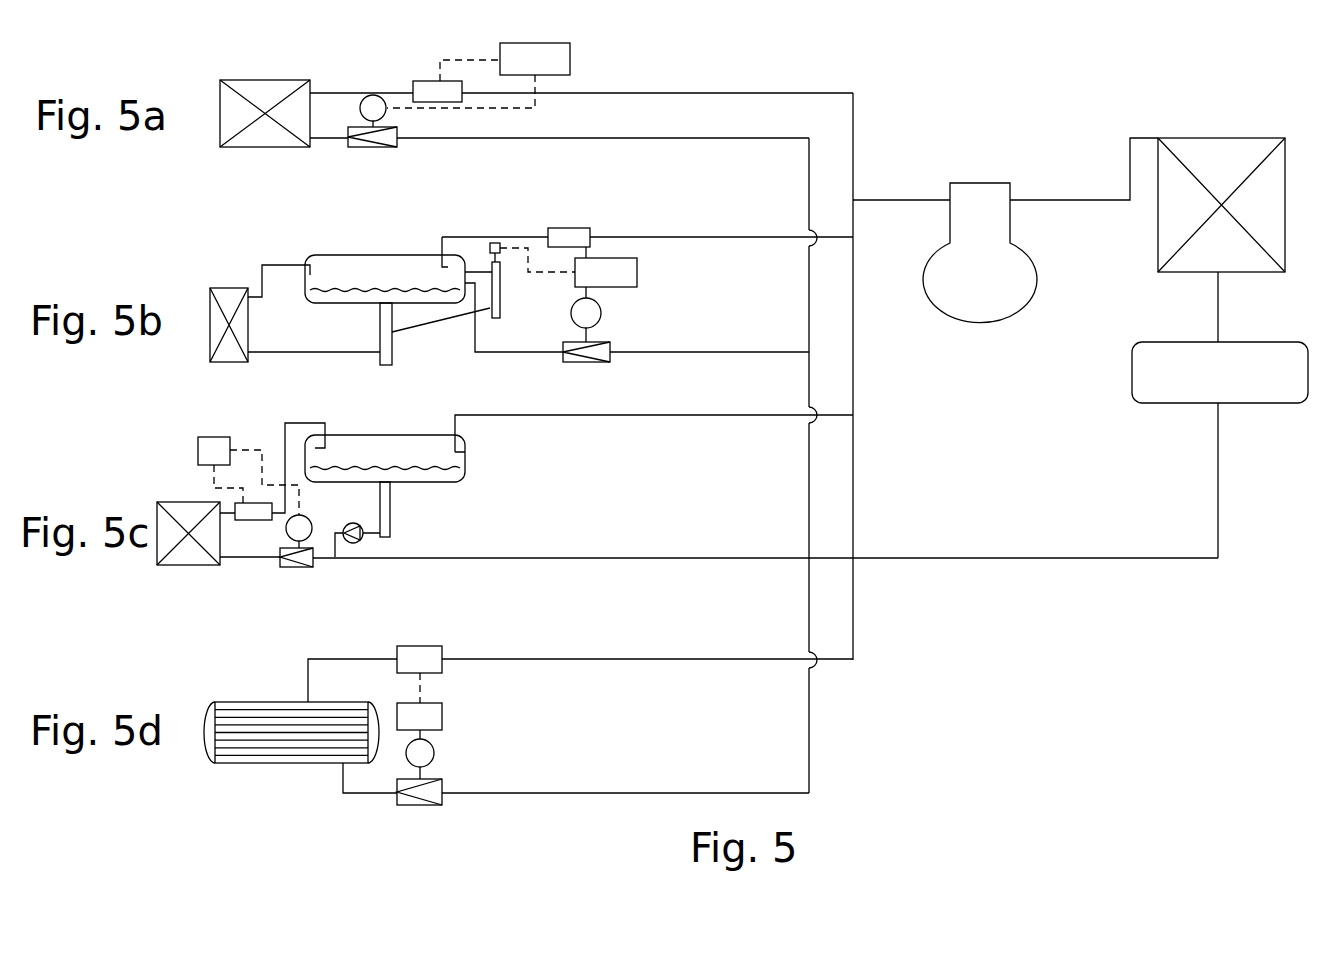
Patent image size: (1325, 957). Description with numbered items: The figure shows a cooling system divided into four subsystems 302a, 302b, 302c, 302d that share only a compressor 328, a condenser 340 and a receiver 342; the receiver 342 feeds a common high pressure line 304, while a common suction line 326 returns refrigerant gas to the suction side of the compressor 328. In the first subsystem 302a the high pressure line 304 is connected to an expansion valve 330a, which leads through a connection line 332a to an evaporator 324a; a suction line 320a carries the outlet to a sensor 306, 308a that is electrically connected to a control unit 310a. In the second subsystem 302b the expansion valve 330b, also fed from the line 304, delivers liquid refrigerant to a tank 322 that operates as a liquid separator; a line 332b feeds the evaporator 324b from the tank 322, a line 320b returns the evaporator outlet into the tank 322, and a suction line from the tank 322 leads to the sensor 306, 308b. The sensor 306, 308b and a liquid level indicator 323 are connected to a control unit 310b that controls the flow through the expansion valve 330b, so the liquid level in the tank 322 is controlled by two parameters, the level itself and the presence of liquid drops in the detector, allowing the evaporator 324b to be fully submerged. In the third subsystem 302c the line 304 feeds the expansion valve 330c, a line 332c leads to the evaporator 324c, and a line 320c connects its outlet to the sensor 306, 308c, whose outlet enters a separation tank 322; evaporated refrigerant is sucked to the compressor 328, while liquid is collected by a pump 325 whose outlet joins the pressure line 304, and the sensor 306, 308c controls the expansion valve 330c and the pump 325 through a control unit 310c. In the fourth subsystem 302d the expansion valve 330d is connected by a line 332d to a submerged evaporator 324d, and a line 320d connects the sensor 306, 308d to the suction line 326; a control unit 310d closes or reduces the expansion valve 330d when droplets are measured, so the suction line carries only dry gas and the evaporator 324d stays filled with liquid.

In FIG. 5A, the system 302a is at (560, 110).
In FIG. 5B, the system 302b is at (500, 316).
In FIG. 5C, the subsystem 302c is at (487, 499).
In FIG. 5D, the system 302d is at (523, 729).
In FIG. 5, the high pressure line 304 is at (918, 558).
In FIG. 5A, the sensor 306 is at (505, 118).
In FIG. 5B, the sensor 306 is at (655, 220).
In FIG. 5C, the sensor 306 is at (280, 567).
In FIG. 5D, the sensor 306 is at (507, 655).
In FIG. 5A, the sensor 308a is at (457, 103).
In FIG. 5B, the sensor 308b is at (573, 228).
In FIG. 5C, the sensor 308c is at (247, 522).
In FIG. 5D, the sensor 308d is at (445, 652).
In FIG. 5A, the control unit 310a is at (478, 75).
In FIG. 5B, the control unit 310b is at (606, 272).
In FIG. 5C, the control unit 310c is at (198, 460).
In FIG. 5D, the control unit 310d is at (445, 715).
In FIG. 5A, the suction line 320a is at (328, 92).
In FIG. 5B, the line 320b is at (262, 277).
In FIG. 5C, the line 320c is at (227, 512).
In FIG. 5D, the line 320d is at (305, 682).
In FIG. 5B, the tank 322 is at (303, 272).
In FIG. 5C, the tank 322 is at (465, 460).
In FIG. 5B, the liquid level indicator 323 is at (498, 320).
In FIG. 5A, the evaporator 324a is at (250, 150).
In FIG. 5B, the evaporator 324b is at (233, 363).
In FIG. 5C, the evaporator 324c is at (170, 502).
In FIG. 5D, the evaporator 324d is at (257, 764).
In FIG. 5C, the pump 325 is at (390, 537).
In FIG. 5, the suction line 326 is at (853, 122).
In FIG. 5, the compressor 328 is at (972, 322).
In FIG. 5A, the expansion valve 330a is at (400, 145).
In FIG. 5B, the expansion valve 330b is at (613, 360).
In FIG. 5C, the expansion valve 330c is at (315, 563).
In FIG. 5D, the expansion valve 330d is at (445, 797).
In FIG. 5A, the connection line 332a is at (332, 138).
In FIG. 5B, the line 332b is at (295, 355).
In FIG. 5C, the line 332c is at (244, 557).
In FIG. 5D, the line 332d is at (358, 793).
In FIG. 5, the condenser 340 is at (1158, 238).
In FIG. 5, the receiver 342 is at (1132, 368).